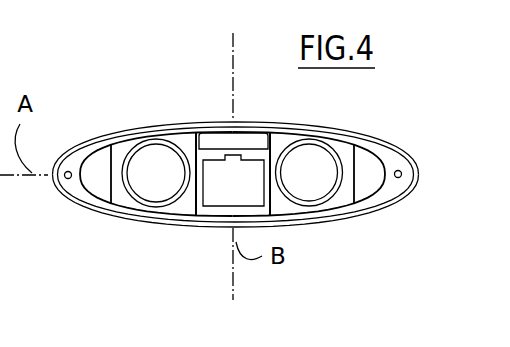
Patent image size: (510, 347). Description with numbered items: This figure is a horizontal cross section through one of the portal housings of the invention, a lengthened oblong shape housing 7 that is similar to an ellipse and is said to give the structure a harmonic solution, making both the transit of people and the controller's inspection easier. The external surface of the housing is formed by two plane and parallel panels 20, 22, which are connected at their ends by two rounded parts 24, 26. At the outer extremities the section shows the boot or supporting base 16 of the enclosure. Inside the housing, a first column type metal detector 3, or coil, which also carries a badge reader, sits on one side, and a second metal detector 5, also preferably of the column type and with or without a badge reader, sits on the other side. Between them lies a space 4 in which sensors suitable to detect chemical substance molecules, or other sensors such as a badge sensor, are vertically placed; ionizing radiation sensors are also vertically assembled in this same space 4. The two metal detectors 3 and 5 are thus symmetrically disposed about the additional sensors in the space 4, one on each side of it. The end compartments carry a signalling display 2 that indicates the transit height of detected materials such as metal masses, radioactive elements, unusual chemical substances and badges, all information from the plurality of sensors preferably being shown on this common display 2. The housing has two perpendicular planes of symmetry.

The signalling display 2 is at (98, 163).
The first column type metal detector 3 is at (156, 162).
The space between the first and second metal detectors 4 is at (242, 176).
The second metal detector 5 is at (308, 163).
The oblong shape housing 7 is at (382, 160).
The boot or supporting base 16 is at (77, 157).
The plane panel 20 is at (201, 123).
The plane panel 22 is at (183, 225).
The rounded part 24 is at (87, 196).
The rounded part 26 is at (380, 196).